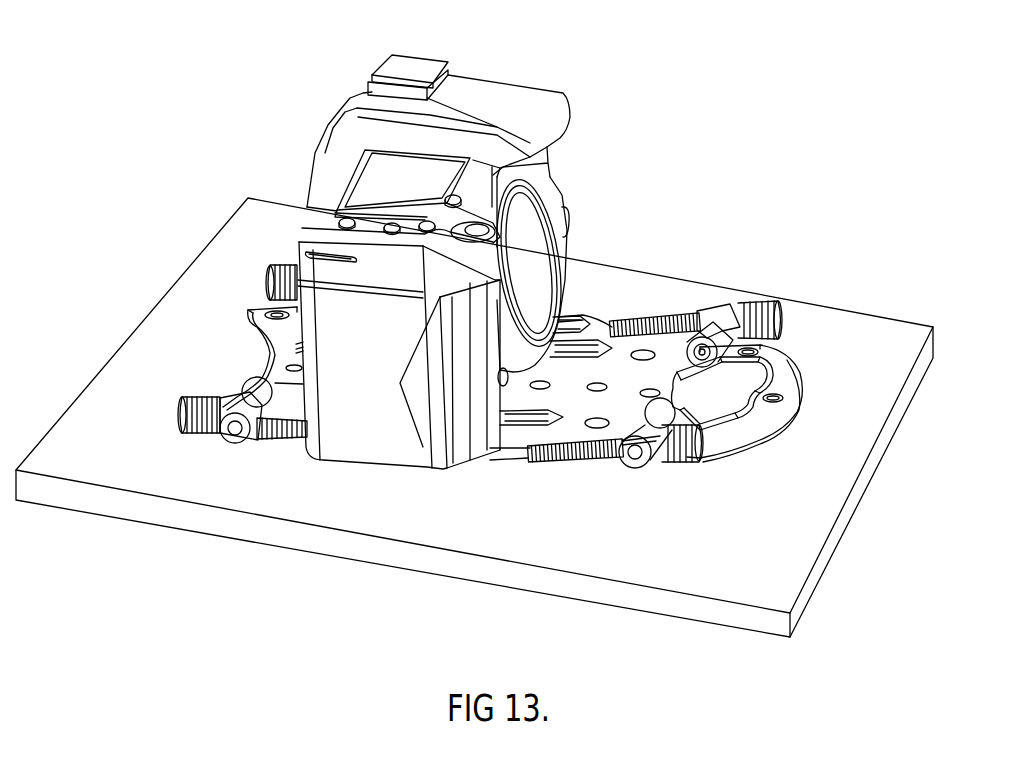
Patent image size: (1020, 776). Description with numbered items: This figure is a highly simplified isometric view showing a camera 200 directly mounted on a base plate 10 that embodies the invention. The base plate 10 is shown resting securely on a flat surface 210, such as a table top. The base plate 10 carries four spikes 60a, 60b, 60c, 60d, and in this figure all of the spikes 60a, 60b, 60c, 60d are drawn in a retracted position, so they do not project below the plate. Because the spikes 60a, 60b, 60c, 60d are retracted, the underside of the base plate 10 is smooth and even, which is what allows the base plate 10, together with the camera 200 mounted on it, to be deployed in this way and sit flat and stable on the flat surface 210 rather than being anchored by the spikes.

The base plate 10 is at (793, 355).
The spike 60a is at (685, 317).
The spike 60b is at (577, 470).
The spike 60c is at (265, 442).
The spike 60d is at (272, 265).
The camera 200 is at (552, 158).
The flat surface 210 is at (693, 577).